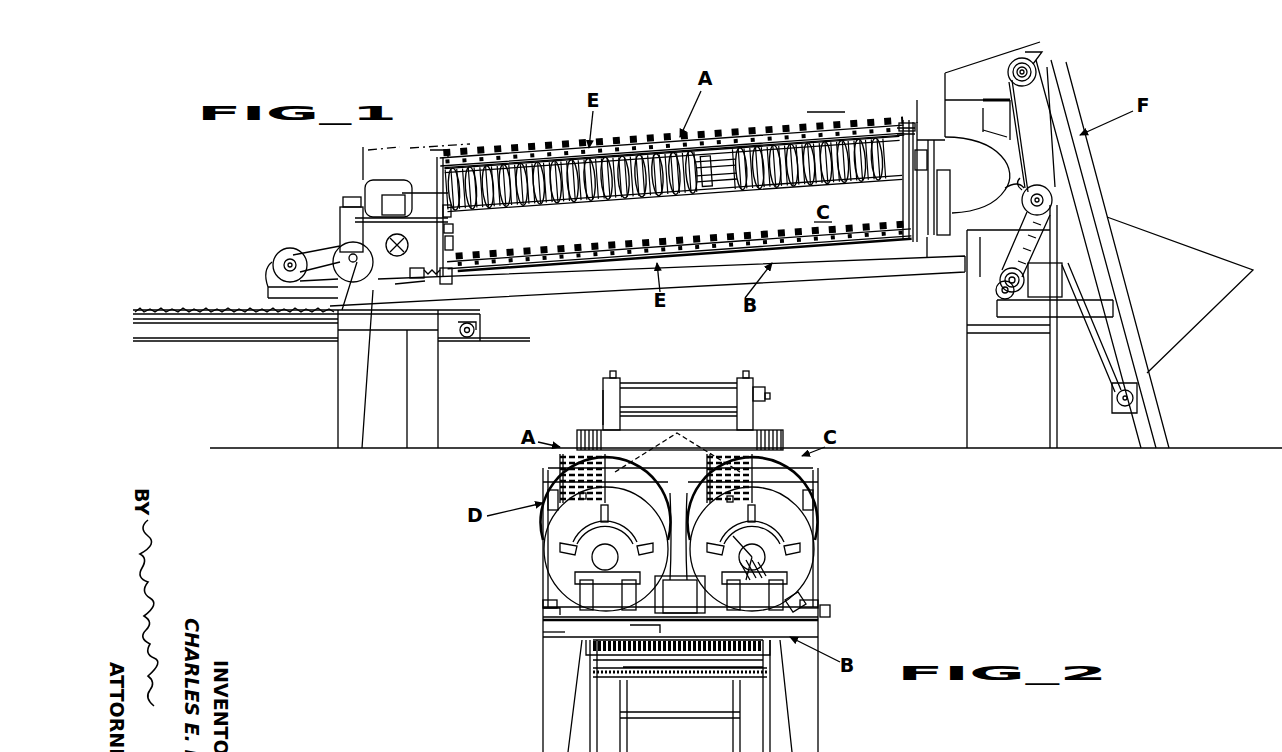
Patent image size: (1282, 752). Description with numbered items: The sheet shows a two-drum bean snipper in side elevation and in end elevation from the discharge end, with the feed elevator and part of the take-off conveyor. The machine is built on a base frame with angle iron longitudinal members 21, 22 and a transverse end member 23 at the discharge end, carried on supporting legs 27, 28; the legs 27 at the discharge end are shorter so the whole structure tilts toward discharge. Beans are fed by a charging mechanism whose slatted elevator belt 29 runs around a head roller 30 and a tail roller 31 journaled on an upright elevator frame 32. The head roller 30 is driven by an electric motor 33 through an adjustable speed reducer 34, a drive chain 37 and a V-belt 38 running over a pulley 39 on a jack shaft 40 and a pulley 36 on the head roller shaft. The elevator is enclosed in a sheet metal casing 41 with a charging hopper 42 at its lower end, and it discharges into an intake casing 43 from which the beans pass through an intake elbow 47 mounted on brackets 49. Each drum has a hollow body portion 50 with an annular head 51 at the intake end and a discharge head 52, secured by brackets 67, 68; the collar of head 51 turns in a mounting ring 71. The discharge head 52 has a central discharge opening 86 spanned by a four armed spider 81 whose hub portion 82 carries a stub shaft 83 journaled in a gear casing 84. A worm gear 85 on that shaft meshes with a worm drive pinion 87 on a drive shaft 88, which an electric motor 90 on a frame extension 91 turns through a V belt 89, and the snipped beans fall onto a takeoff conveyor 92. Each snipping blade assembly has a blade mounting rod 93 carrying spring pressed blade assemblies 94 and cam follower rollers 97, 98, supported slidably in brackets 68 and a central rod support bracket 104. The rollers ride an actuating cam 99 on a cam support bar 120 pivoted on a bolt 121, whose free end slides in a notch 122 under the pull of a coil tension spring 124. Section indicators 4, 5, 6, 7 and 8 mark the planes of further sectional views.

In FIG. 1, the section line 4- 4 is at (1007, 118).
In FIG. 1, the section line 5- 5 is at (903, 108).
In FIG. 1, the section line 6- 6 is at (823, 110).
In FIG. 1, the section line 7- 7 is at (385, 122).
In FIG. 1, the section line 8- 8 is at (360, 163).
In FIG. 2, the longitudinal member 21 is at (545, 604).
In FIG. 1, the longitudinal member 22 is at (887, 253).
In FIG. 2, the longitudinal member 22 is at (820, 591).
In FIG. 2, the transverse end member 23 is at (545, 632).
In FIG. 1, the supporting legs 27 is at (355, 375).
In FIG. 2, the supporting legs 27 is at (556, 651).
In FIG. 1, the supporting legs 28 is at (947, 316).
In FIG. 1, the slatted elevator belt 29 is at (1030, 58).
In FIG. 2, the slatted elevator belt 29 is at (658, 409).
In FIG. 1, the head roller 30 is at (1028, 65).
In FIG. 1, the tail roller 31 is at (1115, 410).
In FIG. 1, the elevator frame 32 is at (1060, 104).
In FIG. 2, the elevator frame 32 is at (605, 405).
In FIG. 1, the electric motor 33 is at (1077, 372).
In FIG. 1, the adjustable speed reducer 34 is at (1000, 292).
In FIG. 1, the pulley 36 is at (1035, 72).
In FIG. 1, the drive chain 37 is at (1022, 220).
In FIG. 1, the V-belt 38 is at (1003, 191).
In FIG. 2, the V-belt 38 is at (772, 395).
In FIG. 1, the pulley 39 is at (1012, 185).
In FIG. 1, the jack shaft 40 is at (1048, 181).
In FIG. 1, the sheet metal casing 41 is at (1095, 205).
In FIG. 2, the sheet metal casing 41 is at (618, 380).
In FIG. 1, the charging hopper 42 is at (1153, 250).
In FIG. 1, the intake casing 43 is at (957, 98).
In FIG. 2, the intake casing 43 is at (612, 437).
In FIG. 1, the intake elbow 47 is at (985, 168).
In FIG. 1, the brackets 49 is at (1040, 274).
In FIG. 1, the hollow body portion 50 is at (763, 219).
In FIG. 2, the hollow body portion 50 is at (543, 513).
In FIG. 1, the annular head 51 is at (896, 122).
In FIG. 2, the annular head 51 is at (766, 456).
In FIG. 1, the discharge head 52 is at (462, 228).
In FIG. 2, the discharge head 52 is at (763, 470).
In FIG. 1, the brackets 67 is at (455, 242).
In FIG. 1, the brackets 68 is at (456, 214).
In FIG. 1, the mounting ring 71 is at (922, 150).
In FIG. 1, the four armed spider 81 is at (355, 278).
In FIG. 1, the hub portion 82 is at (372, 232).
In FIG. 2, the stub shaft 83 is at (740, 548).
In FIG. 1, the gear casing 84 is at (362, 218).
In FIG. 2, the gear casing 84 is at (587, 555).
In FIG. 2, the worm gear 85 is at (752, 572).
In FIG. 1, the central discharge opening 86 is at (348, 197).
In FIG. 2, the worm drive pinion 87 is at (763, 562).
In FIG. 1, the drive shaft 88 is at (350, 278).
In FIG. 2, the drive shaft 88 is at (740, 585).
In FIG. 1, the V belt 89 is at (340, 247).
In FIG. 1, the electric motor 90 is at (299, 252).
In FIG. 2, the electric motor 90 is at (671, 598).
In FIG. 1, the frame extension 91 is at (294, 258).
In FIG. 2, the frame extension 91 is at (630, 631).
In FIG. 1, the takeoff conveyor 92 is at (148, 308).
In FIG. 2, the takeoff conveyor 92 is at (620, 646).
In FIG. 1, the blade mounting rod 93 is at (655, 150).
In FIG. 1, the spring pressed blade assemblies 94 is at (578, 146).
In FIG. 1, the cam follower roller 97 is at (421, 194).
In FIG. 2, the cam follower roller 97 is at (583, 497).
In FIG. 1, the cam follower roller 98 is at (908, 160).
In FIG. 2, the blade support rod actuating cam 99 is at (800, 606).
In FIG. 1, the central rod support bracket 104 is at (670, 138).
In FIG. 1, the cam support bar 120 is at (436, 284).
In FIG. 2, the cam support bar 120 is at (818, 607).
In FIG. 2, the bolt 121 is at (545, 612).
In FIG. 1, the notch 122 is at (412, 296).
In FIG. 1, the coil tension spring 124 is at (430, 277).
In FIG. 2, the coil tension spring 124 is at (828, 615).